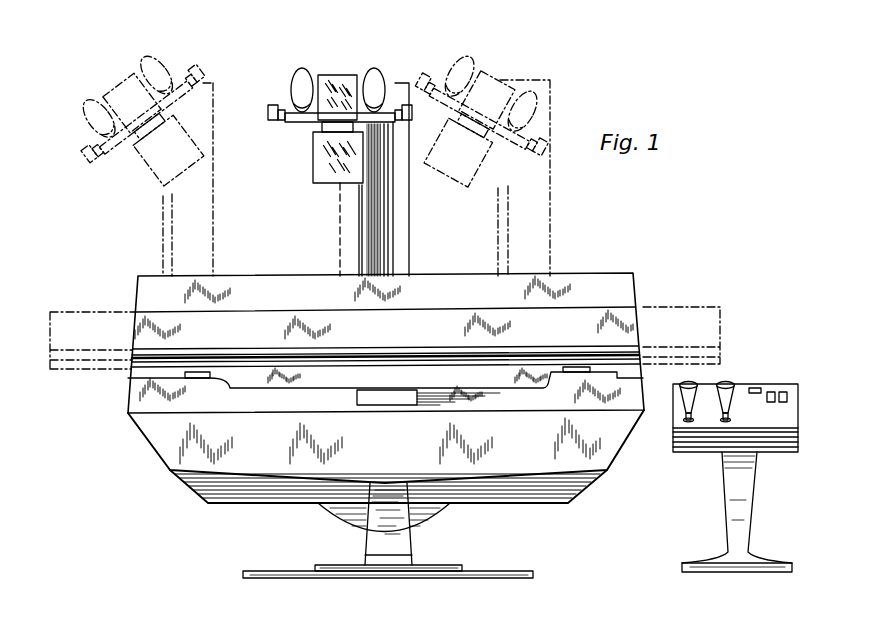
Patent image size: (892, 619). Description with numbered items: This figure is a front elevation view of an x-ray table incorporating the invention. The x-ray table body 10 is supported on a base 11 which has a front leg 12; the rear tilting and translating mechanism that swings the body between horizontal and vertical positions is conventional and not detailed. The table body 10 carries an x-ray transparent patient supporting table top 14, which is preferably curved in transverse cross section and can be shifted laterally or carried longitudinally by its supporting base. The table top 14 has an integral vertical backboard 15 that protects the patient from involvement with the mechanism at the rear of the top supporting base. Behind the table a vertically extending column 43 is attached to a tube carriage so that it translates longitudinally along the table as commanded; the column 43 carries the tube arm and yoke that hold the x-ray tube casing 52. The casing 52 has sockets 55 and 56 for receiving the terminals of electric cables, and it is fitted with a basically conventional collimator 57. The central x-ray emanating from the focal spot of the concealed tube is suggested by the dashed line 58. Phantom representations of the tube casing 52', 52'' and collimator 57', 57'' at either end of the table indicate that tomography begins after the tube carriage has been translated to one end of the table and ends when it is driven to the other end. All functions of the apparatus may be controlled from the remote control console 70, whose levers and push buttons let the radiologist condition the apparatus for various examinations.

The x-ray table body 10 is at (186, 448).
The base 11 is at (260, 571).
The front leg 12 is at (386, 539).
The x-ray transparent patient supporting table top 14 is at (176, 356).
The vertical backboard 15 is at (622, 322).
The column 43 is at (396, 238).
The x-ray tube casing 52 is at (340, 77).
The x-ray tube casing (translated position) 52' is at (136, 153).
The x-ray tube casing (translated position) 52'' is at (487, 151).
The socket 55 is at (304, 68).
The socket 56 is at (378, 68).
The collimator 57 is at (310, 161).
The collimator (translated position) 57' is at (144, 195).
The collimator (translated position) 57'' is at (466, 197).
The central x-ray 58 is at (333, 231).
The remote control console 70 is at (776, 385).